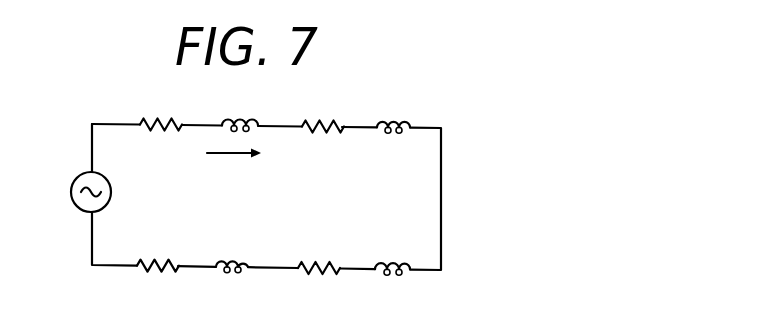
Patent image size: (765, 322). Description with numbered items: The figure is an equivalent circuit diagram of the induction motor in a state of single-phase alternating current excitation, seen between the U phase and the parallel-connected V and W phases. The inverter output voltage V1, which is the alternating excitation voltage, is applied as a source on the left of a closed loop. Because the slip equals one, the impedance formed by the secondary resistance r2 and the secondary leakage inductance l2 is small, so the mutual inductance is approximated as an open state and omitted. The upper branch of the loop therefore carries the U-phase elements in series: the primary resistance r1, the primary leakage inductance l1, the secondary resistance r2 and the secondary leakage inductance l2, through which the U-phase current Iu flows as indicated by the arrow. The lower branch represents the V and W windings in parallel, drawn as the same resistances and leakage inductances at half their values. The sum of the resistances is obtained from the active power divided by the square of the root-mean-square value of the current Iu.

The inverter output voltage V1 is at (71, 192).
The primary resistance r1 is at (161, 111).
The primary leakage inductance l1 is at (240, 112).
The secondary resistance r2 is at (323, 113).
The secondary leakage inductance l2 is at (393, 113).
The U-phase current Iu is at (247, 154).